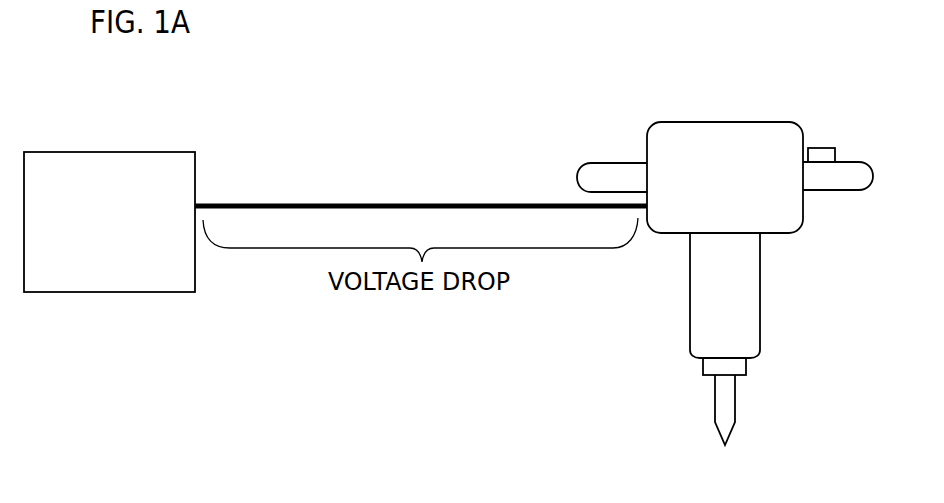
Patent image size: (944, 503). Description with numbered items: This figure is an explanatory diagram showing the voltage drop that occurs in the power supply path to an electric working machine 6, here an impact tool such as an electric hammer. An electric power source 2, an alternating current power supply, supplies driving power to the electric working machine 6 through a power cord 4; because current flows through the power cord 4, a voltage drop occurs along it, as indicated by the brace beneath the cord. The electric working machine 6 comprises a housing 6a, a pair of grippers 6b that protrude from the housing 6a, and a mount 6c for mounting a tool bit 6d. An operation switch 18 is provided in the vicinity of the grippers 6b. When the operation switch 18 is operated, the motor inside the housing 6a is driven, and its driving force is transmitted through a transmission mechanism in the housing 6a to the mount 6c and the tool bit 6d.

The electric power source 2 is at (108, 151).
The power cord 4 is at (422, 204).
The electric working machine 6 is at (725, 255).
The housing 6a is at (690, 131).
The grippers 6b is at (840, 182).
The mount 6c is at (736, 368).
The tool bit 6d is at (725, 415).
The operation switch 18 is at (823, 155).